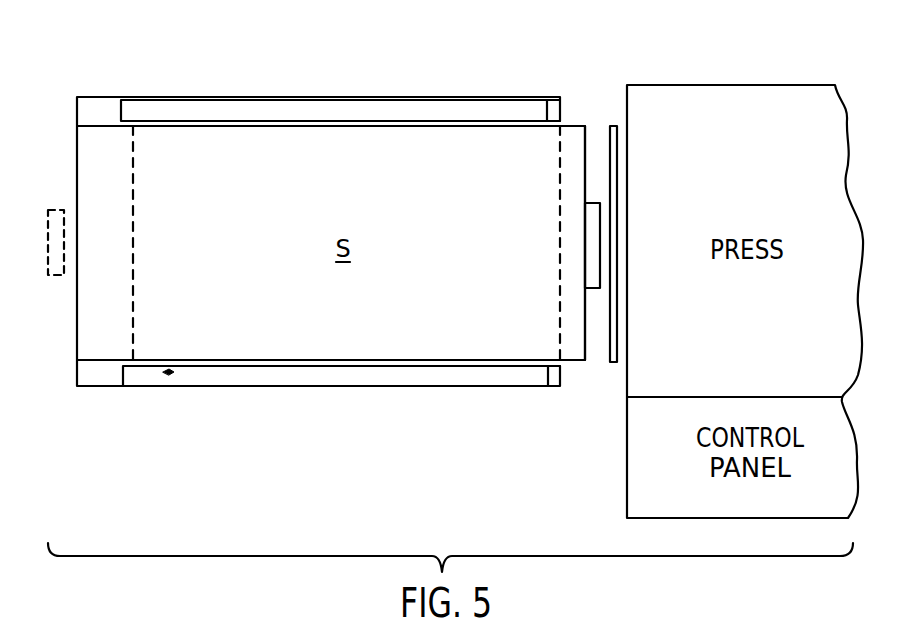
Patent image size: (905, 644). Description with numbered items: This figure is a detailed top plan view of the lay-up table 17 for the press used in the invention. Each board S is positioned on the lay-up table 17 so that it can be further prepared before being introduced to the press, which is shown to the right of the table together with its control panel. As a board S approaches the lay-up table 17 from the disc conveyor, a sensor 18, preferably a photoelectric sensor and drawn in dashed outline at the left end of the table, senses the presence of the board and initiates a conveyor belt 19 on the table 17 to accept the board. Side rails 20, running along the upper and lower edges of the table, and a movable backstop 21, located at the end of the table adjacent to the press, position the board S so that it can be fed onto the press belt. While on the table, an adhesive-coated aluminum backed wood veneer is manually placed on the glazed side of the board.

The lay-up table 17 is at (378, 97).
The sensor 18 is at (47, 228).
The conveyor belt 19 is at (478, 140).
The side rails 20 is at (440, 106).
The movable backstop 21 is at (594, 200).